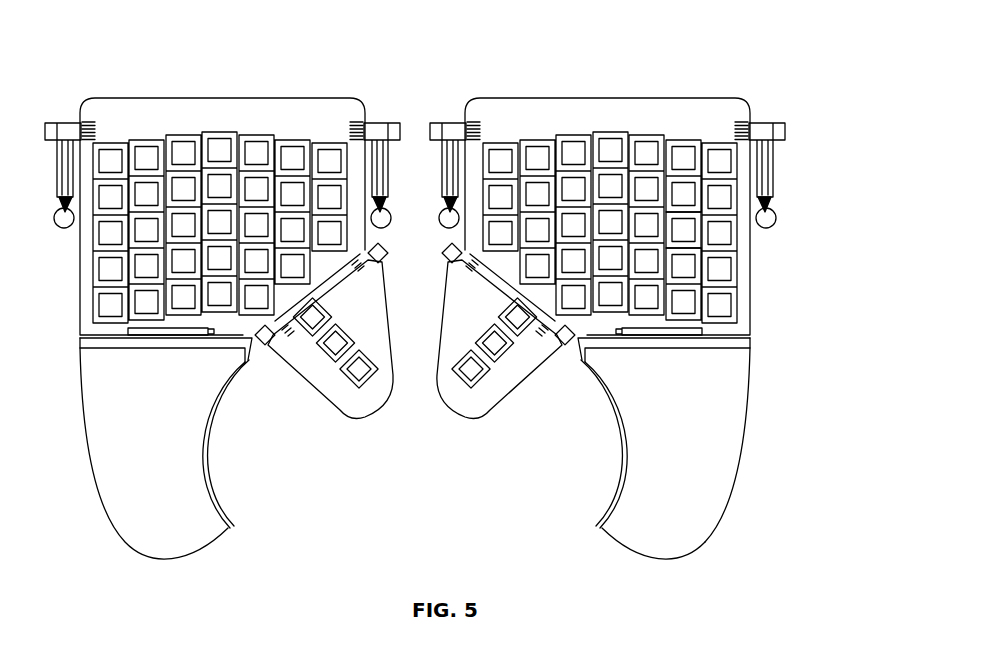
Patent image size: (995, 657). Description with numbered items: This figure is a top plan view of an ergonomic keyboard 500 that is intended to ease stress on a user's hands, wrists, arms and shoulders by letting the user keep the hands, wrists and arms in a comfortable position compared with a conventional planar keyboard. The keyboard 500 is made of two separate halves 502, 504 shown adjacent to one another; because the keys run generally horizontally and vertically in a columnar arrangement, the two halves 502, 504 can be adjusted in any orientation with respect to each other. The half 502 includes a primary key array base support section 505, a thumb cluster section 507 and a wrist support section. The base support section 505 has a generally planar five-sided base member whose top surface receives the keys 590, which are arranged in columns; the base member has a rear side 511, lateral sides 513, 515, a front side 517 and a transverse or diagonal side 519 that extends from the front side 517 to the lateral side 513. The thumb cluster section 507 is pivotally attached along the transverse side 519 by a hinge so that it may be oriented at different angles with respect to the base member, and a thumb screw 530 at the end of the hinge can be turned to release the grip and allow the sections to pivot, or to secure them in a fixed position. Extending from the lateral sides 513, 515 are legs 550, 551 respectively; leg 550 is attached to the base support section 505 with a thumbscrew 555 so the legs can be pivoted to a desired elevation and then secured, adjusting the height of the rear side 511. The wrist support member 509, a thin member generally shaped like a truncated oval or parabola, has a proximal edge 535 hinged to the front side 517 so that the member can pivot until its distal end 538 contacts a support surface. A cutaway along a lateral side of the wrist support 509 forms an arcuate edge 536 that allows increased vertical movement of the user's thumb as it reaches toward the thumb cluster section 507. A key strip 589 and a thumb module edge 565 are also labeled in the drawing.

The ergonomic keyboard 500 is at (448, 320).
The keyboard half 502 is at (617, 334).
The keyboard half 504 is at (268, 468).
The rear side 511 is at (547, 97).
The key column 589 is at (637, 112).
The leg 550 is at (429, 144).
The thumbscrew 555 is at (434, 144).
The lateral side 513 is at (452, 170).
The leg 551 is at (775, 158).
The lateral side 515 is at (690, 230).
The keys 590 is at (758, 226).
The primary key array base support section 505 is at (731, 333).
The proximal edge 535 is at (680, 343).
The wrist support member 509 is at (676, 482).
The arcuate edge 536 is at (612, 498).
The distal end 538 is at (660, 563).
The front side 517 is at (608, 388).
The thumb module body edge 565 is at (528, 378).
The thumb cluster section 507 is at (492, 336).
The transverse side 519 is at (477, 277).
The thumb screw 530 is at (445, 243).